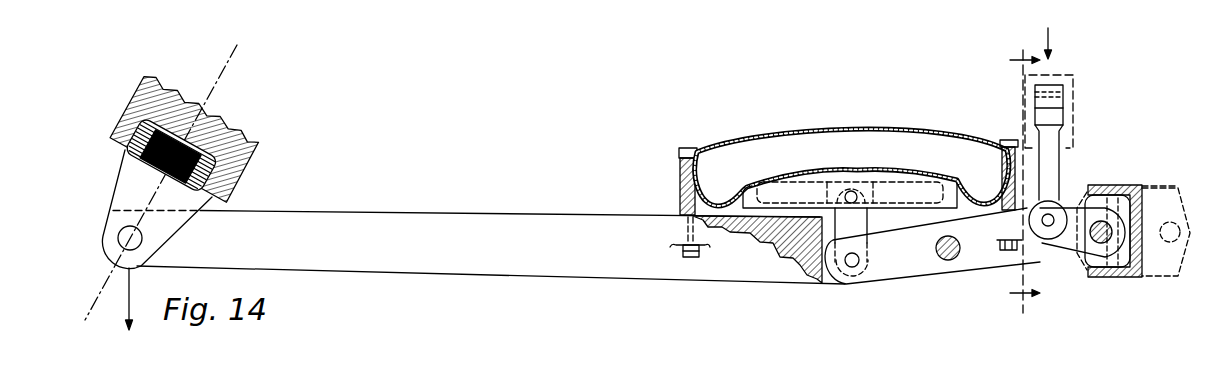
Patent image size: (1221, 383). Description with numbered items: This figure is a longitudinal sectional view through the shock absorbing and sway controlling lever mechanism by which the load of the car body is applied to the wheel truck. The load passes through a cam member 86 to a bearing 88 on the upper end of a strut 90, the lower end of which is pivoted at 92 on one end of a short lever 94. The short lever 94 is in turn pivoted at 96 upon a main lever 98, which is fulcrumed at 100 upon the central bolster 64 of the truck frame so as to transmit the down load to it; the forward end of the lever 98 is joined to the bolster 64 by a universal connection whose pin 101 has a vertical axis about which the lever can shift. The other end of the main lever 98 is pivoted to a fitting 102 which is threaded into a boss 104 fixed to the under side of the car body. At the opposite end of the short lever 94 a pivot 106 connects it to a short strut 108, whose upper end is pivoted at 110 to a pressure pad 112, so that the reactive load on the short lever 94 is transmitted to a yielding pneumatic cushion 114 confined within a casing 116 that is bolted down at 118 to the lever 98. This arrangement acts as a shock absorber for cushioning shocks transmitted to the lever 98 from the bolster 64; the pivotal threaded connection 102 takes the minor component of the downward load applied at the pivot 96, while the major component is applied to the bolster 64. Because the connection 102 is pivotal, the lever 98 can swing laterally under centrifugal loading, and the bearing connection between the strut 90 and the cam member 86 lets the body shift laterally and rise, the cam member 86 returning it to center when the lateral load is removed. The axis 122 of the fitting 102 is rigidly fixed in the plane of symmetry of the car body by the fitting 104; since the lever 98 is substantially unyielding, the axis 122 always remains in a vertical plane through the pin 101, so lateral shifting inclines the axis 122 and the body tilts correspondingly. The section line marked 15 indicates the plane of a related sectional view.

The section line 15- 15 is at (1013, 181).
The bolster 64 is at (1112, 183).
The cam member 86 is at (1067, 115).
The bearing 88 is at (1058, 102).
The strut 90 is at (1060, 158).
The pivot 92 is at (1062, 243).
The short lever 94 is at (877, 272).
The pivot 96 is at (950, 260).
The main lever 98 is at (513, 268).
The fulcrum 100 is at (1181, 277).
The pin 101 is at (1123, 187).
The fitting 102 is at (116, 193).
The boss 104 is at (204, 116).
The pivot 106 is at (853, 270).
The short strut 108 is at (860, 223).
The pivot 110 is at (857, 199).
The pressure pad 112 is at (797, 185).
The pneumatic cushion 114 is at (772, 133).
The casing 116 is at (722, 147).
The bolt 118 is at (686, 147).
The axis 122 is at (228, 52).